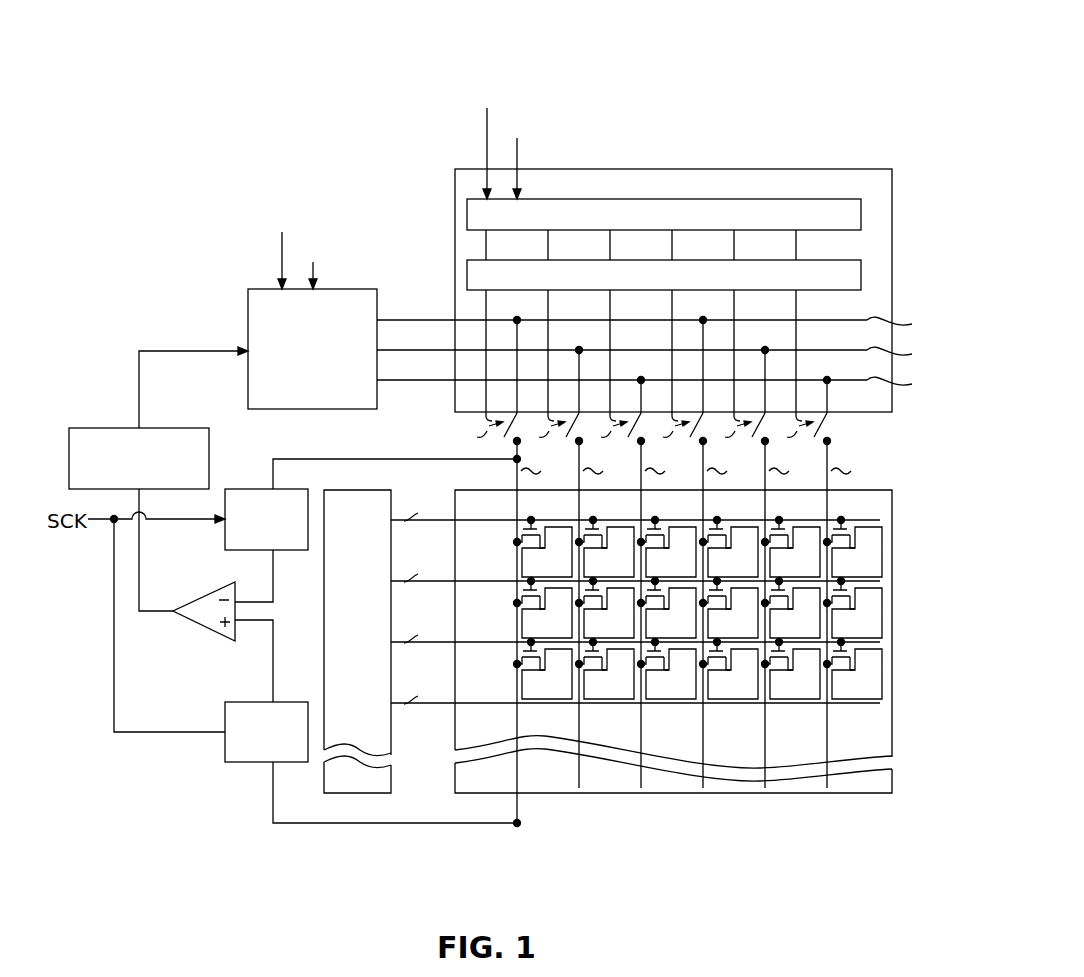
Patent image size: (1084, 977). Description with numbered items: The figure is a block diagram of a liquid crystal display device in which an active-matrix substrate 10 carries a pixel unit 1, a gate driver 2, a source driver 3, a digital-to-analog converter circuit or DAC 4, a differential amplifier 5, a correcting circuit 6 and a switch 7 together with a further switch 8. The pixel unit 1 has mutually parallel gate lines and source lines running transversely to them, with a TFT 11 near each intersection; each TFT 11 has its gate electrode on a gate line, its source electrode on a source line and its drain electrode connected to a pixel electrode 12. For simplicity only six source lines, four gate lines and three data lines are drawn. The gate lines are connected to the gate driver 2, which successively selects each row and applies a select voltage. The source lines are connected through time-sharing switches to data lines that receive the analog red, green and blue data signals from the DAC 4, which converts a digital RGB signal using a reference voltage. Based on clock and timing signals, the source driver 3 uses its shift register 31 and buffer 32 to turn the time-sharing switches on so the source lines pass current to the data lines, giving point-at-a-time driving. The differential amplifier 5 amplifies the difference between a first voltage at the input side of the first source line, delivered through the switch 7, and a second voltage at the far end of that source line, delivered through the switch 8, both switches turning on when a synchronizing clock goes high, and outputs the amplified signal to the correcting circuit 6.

The active-matrix substrate 10 is at (686, 78).
The pixel unit 1 is at (893, 510).
The gate driver 2 is at (362, 489).
The source driver 3 is at (728, 169).
The shift register 31 is at (862, 213).
The buffer 32 is at (862, 275).
The digital-to-analog converter circuit (DAC) 4 is at (258, 289).
The differential amplifier 5 is at (195, 640).
The correcting circuit 6 is at (198, 428).
The switch 7 is at (250, 489).
The switch 8 is at (246, 763).
The TFT 11 is at (538, 536).
The pixel electrode 12 is at (522, 571).